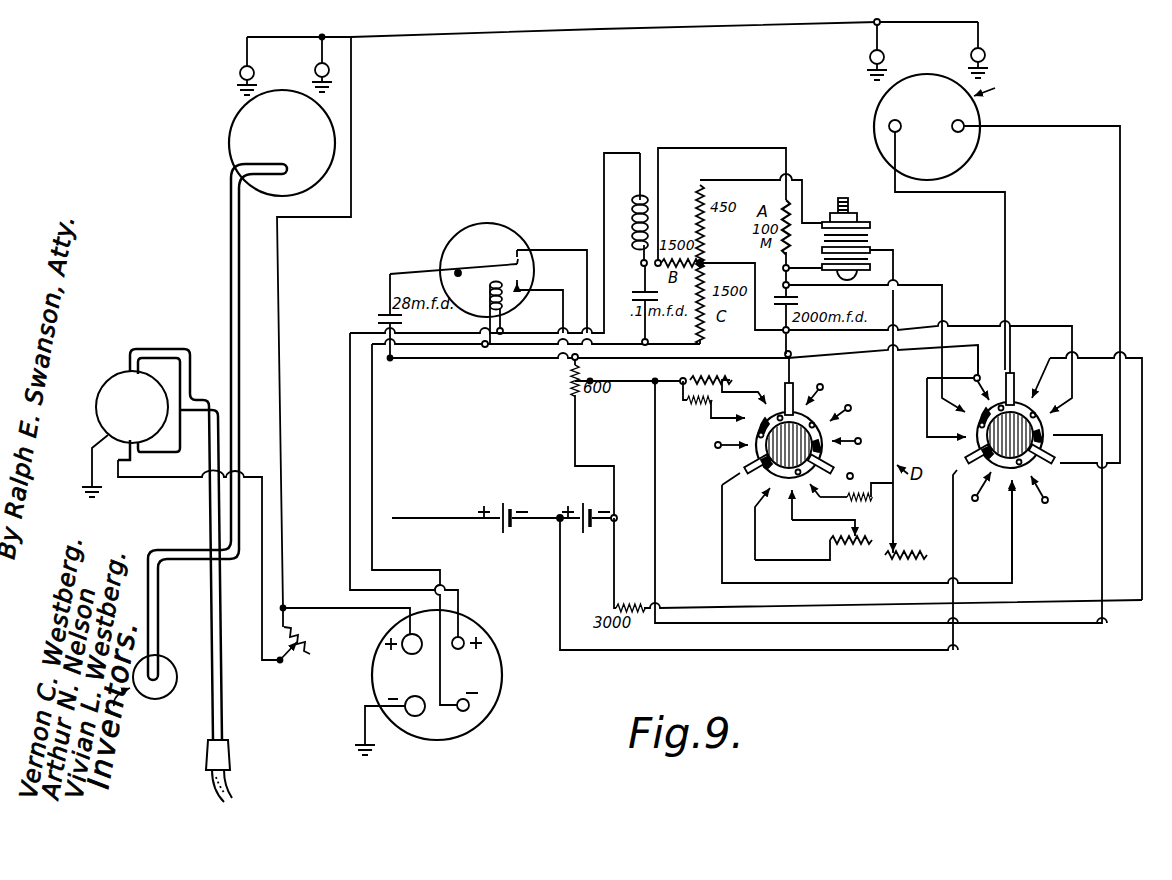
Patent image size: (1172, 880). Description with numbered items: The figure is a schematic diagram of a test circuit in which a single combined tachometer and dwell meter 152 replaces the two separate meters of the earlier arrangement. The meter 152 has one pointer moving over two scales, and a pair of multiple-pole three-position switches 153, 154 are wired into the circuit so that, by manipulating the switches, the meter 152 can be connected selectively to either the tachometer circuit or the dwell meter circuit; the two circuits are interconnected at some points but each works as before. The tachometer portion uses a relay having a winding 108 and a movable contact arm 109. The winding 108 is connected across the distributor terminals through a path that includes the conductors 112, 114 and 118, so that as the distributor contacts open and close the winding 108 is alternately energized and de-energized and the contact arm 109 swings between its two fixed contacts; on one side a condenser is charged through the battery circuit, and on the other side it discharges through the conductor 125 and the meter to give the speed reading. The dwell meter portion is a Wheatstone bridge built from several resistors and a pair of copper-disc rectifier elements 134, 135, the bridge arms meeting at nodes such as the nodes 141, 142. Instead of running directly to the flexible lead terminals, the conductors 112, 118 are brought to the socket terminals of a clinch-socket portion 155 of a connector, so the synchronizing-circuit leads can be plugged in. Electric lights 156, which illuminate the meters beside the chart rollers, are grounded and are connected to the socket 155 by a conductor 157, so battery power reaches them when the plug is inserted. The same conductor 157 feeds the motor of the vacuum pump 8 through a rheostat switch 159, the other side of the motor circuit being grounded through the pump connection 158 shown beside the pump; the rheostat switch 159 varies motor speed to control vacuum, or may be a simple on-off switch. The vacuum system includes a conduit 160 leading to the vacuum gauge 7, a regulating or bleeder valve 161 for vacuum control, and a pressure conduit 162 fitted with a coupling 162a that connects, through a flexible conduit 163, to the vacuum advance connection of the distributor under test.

The vacuum gauge 7 is at (228, 126).
The vacuum pump and motor assembly 8 is at (104, 382).
The relay winding 108 is at (505, 308).
The movable contact arm 109 is at (458, 272).
The conductor 112 is at (350, 552).
The conductor 114 is at (563, 292).
The conductor 118 is at (374, 556).
The conductor 125 is at (576, 250).
The rectifier element 134 is at (874, 257).
The rectifier element 135 is at (874, 232).
The node 141 is at (703, 263).
The node 142 is at (641, 266).
The combined tachometer and dwell meter 152 is at (982, 139).
The multiple-pole three-position switch 153 is at (1060, 480).
The multiple-pole three-position switch 154 is at (720, 466).
The clinch-socket portion 155 is at (500, 706).
The electric lights 156 is at (240, 70).
The conductor 157 is at (282, 300).
The conductor from vacuum pump 158 is at (174, 477).
The rheostat switch 159 is at (284, 662).
The conduit 160 is at (230, 298).
The regulating valve 161 is at (144, 665).
The pressure conduit 162 is at (224, 738).
The coupling 162a is at (228, 757).
The flexible conduit 163 is at (230, 786).